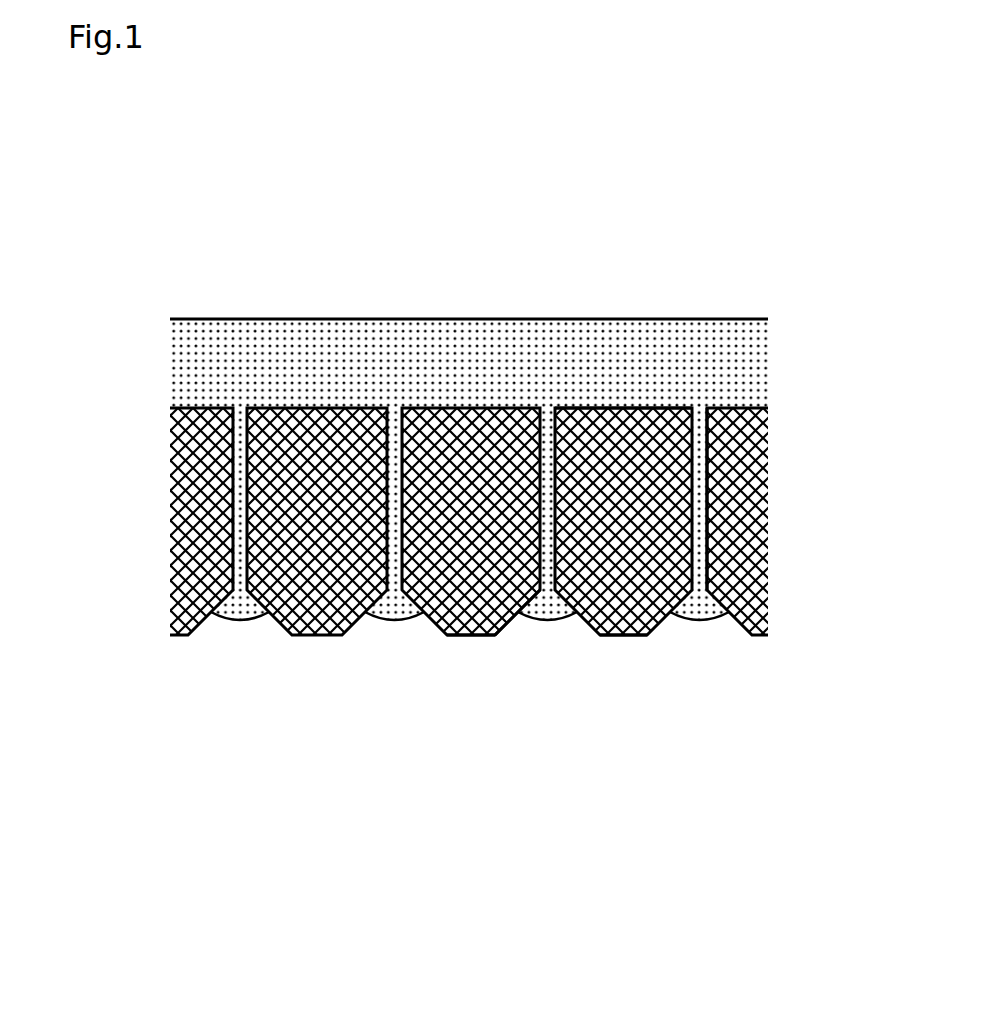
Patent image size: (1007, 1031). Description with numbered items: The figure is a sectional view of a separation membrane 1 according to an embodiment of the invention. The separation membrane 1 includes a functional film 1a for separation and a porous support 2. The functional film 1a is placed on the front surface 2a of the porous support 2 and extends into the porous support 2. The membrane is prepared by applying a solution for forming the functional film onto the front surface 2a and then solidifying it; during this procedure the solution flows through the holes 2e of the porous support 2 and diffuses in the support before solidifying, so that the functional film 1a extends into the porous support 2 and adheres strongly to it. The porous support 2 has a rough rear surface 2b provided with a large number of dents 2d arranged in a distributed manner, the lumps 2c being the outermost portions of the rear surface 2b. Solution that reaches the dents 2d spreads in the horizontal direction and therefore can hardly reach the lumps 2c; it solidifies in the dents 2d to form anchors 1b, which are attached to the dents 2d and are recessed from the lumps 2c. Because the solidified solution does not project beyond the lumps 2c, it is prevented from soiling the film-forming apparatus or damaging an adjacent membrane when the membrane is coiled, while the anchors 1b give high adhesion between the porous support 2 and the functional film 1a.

The separation membrane 1 is at (355, 295).
The functional film 1a is at (227, 369).
The anchors 1b is at (245, 605).
The porous support 2 is at (308, 597).
The front surface 2a is at (630, 405).
The rear surface 2b is at (629, 637).
The lumps 2c is at (465, 637).
The dents 2d is at (523, 600).
The holes 2e is at (710, 510).